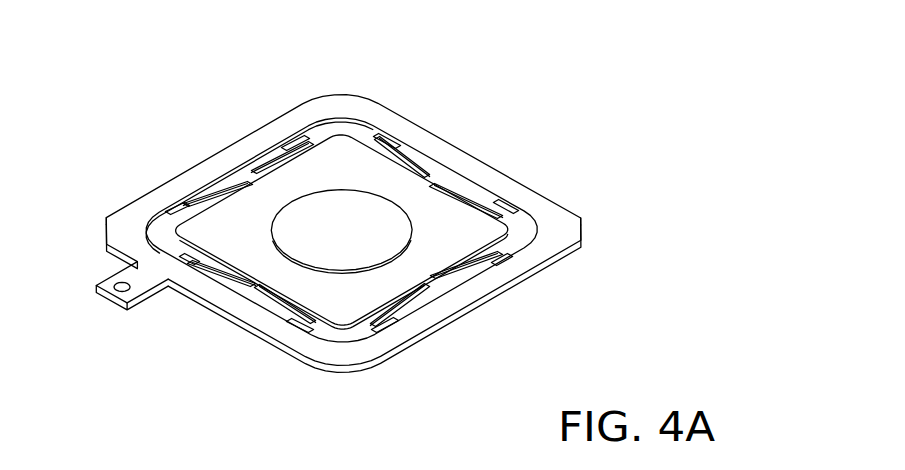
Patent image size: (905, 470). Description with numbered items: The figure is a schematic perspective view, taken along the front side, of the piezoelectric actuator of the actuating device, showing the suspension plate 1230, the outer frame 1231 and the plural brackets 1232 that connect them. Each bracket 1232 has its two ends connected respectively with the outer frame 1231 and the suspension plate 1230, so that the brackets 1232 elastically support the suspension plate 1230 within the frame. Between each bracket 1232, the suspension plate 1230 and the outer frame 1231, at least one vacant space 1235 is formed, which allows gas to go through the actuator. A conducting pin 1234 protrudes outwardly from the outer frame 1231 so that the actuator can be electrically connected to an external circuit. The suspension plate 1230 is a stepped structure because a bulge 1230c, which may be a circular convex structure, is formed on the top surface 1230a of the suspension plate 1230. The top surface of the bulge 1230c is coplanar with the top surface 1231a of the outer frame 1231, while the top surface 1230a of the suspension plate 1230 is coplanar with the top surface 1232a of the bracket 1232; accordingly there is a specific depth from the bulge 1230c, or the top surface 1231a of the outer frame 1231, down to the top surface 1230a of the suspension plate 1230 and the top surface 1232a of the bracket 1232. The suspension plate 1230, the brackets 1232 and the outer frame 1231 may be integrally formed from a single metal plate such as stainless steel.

The suspension plate 1230 is at (337, 137).
The top surface of the suspension plate 1230a is at (353, 150).
The bulge 1230c is at (365, 228).
The outer frame 1231 is at (357, 344).
The top surface of the outer frame 1231a is at (333, 356).
The bracket 1232 is at (252, 178).
The top surface of the bracket 1232a is at (235, 168).
The conducting pin 1234 is at (114, 281).
The vacant space 1235 is at (516, 232).